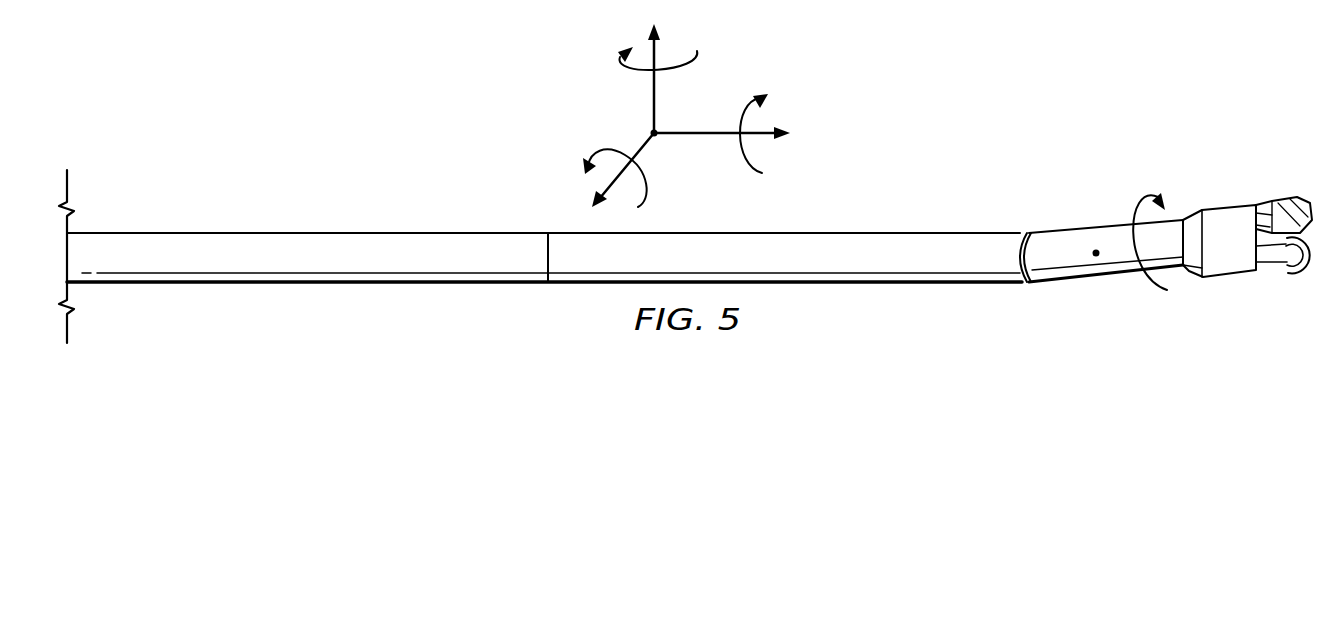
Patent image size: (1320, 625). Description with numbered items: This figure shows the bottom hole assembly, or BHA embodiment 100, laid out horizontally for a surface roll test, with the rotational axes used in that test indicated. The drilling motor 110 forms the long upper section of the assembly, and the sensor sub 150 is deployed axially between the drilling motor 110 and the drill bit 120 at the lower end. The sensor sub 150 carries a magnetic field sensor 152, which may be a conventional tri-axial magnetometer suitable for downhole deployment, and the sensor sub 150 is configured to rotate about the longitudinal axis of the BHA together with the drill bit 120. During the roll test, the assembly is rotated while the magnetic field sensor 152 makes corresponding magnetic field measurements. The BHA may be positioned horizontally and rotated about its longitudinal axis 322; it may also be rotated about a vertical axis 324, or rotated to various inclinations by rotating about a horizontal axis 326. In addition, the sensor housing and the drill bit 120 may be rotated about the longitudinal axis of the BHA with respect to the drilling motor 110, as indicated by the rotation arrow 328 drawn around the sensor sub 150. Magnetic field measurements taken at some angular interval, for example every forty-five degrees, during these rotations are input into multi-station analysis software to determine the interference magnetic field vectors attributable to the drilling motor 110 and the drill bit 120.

The BHA embodiment 100 is at (500, 147).
The drilling motor 110 is at (805, 233).
The drill bit 120 is at (1228, 205).
The sensor sub 150 is at (1087, 230).
The magnetic field sensor 152 is at (1096, 257).
The longitudinal axis 322 is at (705, 130).
The vertical axis 324 is at (653, 101).
The horizontal axis 326 is at (638, 152).
The rotation of sensor housing and drill bit 328 is at (1144, 203).